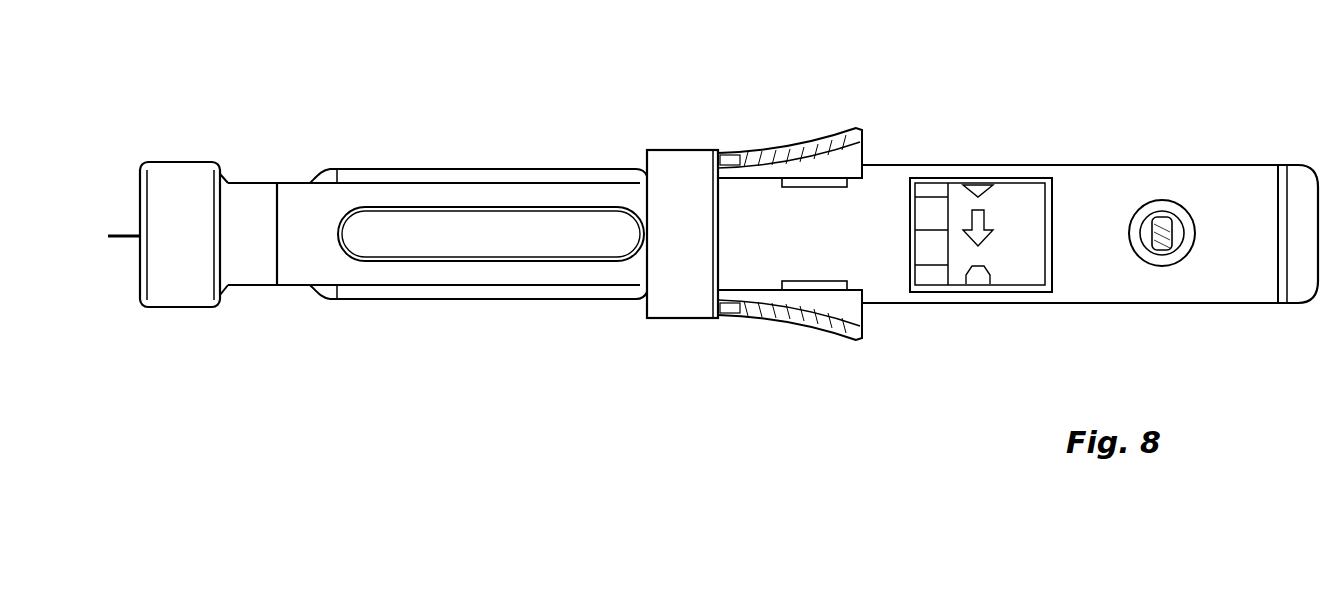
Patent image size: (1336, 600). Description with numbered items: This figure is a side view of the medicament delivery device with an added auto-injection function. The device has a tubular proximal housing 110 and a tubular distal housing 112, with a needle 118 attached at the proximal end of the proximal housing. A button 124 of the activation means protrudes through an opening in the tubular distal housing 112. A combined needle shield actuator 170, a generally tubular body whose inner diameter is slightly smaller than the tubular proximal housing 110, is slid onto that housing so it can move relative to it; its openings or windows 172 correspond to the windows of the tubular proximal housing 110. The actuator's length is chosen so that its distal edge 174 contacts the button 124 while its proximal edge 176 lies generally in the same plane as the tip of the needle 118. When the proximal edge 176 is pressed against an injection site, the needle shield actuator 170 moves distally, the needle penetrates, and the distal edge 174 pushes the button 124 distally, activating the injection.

The tubular proximal housing 110 is at (433, 182).
The tubular distal housing 112 is at (1093, 180).
The needle 118 is at (124, 233).
The button 124 is at (772, 153).
The needle shield actuator 170 is at (300, 255).
The openings or windows 172 is at (553, 233).
The distal edge 174 is at (719, 233).
The proximal edge 176 is at (143, 275).